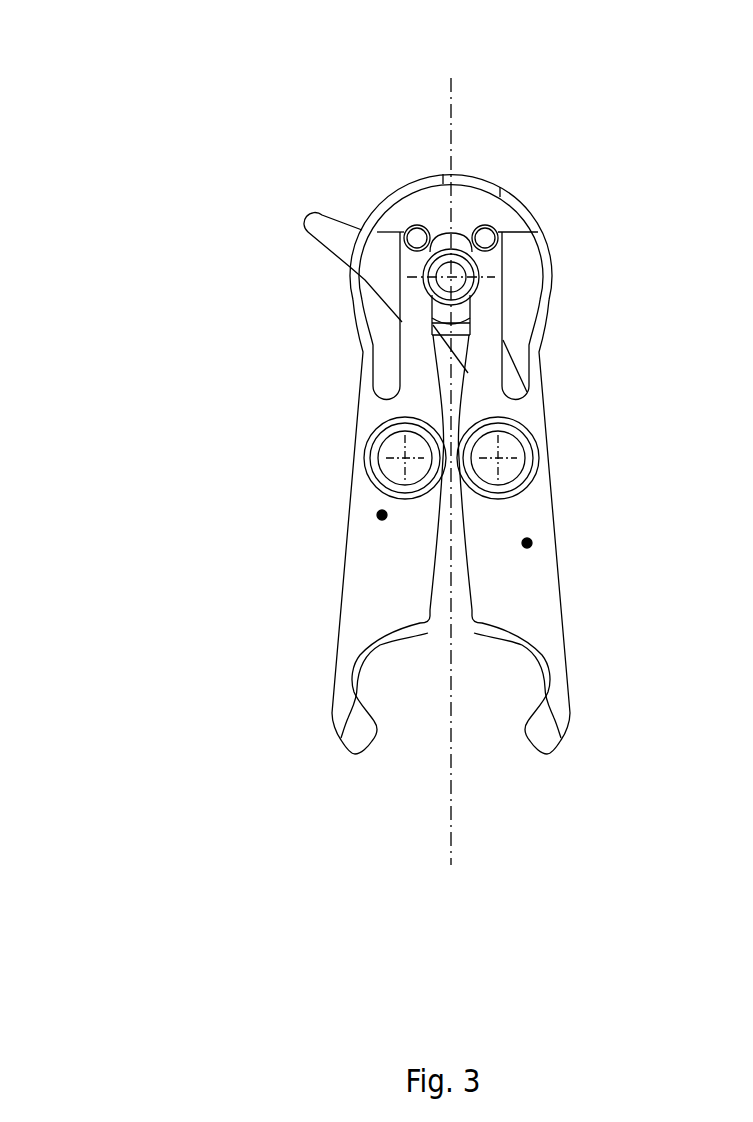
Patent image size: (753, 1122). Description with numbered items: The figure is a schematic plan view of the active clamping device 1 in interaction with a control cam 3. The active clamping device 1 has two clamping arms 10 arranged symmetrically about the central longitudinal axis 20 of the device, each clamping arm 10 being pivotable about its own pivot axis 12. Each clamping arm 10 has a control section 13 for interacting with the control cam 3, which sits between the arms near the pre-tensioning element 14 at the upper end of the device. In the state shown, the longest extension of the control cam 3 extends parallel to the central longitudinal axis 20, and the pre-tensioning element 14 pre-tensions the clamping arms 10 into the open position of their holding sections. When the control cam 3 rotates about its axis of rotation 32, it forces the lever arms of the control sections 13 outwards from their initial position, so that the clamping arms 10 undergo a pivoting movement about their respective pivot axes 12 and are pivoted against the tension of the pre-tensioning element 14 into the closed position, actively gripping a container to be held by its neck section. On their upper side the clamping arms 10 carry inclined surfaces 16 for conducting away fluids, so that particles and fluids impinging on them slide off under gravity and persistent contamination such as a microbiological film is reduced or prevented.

The active clamping device 1 is at (152, 121).
The central longitudinal axis 20 is at (450, 120).
The pre-tensioning element 14 is at (523, 220).
The control cam 3 is at (443, 242).
The axis of rotation 32 is at (452, 278).
The control section 13 is at (410, 332).
The pivot axis 12 is at (405, 458).
The inclined surface 16 is at (382, 515).
The clamping arm 10 is at (377, 588).